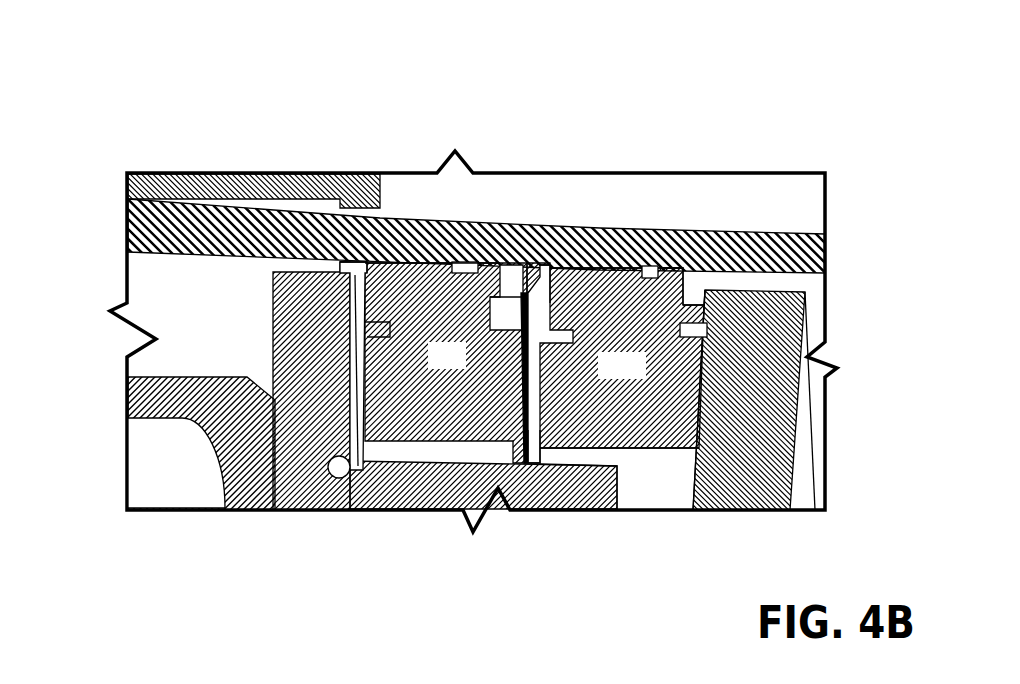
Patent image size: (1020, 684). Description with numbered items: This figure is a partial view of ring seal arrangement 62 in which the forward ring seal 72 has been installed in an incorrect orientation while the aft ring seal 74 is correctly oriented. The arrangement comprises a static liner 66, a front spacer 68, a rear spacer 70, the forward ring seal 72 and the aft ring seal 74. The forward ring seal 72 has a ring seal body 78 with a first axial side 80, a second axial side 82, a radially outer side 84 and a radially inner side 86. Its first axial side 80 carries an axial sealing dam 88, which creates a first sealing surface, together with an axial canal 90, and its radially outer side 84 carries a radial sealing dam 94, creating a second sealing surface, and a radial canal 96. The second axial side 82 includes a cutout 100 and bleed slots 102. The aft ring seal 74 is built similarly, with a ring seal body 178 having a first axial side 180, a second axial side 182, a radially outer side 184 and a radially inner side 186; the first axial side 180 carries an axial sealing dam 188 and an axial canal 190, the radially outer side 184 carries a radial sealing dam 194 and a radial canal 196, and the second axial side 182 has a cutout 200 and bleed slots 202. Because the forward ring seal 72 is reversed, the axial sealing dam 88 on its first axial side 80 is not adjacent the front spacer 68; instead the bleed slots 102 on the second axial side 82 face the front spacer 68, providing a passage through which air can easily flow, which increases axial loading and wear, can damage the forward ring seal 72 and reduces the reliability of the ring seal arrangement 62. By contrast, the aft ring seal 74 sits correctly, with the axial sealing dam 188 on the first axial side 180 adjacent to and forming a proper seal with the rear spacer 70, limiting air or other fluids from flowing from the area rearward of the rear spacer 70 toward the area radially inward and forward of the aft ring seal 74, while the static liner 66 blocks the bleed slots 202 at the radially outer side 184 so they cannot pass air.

The ring seal arrangement 62 is at (81, 160).
The static liner 66 is at (185, 222).
The front spacer 68 is at (293, 372).
The rear spacer 70 is at (765, 393).
The forward ring seal 72 is at (415, 407).
The aft ring seal 74 is at (626, 425).
The ring seal body 78 is at (434, 366).
The first axial side 80 is at (512, 384).
The second axial side 82 is at (384, 374).
The radially outer side 84 is at (371, 258).
The radially inner side 86 is at (455, 432).
The axial sealing dam 88 is at (508, 303).
The axial canal 90 is at (508, 322).
The radial sealing dam 94 is at (477, 262).
The radial canal 96 is at (457, 267).
The cutout 100 is at (381, 370).
The bleed slots 102 is at (353, 297).
The ring seal body 178 is at (603, 376).
The first axial side 180 is at (698, 414).
The second axial side 182 is at (555, 400).
The radially outer side 184 is at (607, 267).
The radially inner side 186 is at (590, 442).
The axial sealing dam 188 is at (697, 318).
The axial canal 190 is at (693, 329).
The radial sealing dam 194 is at (670, 283).
The radial canal 196 is at (647, 275).
The cutout 200 is at (547, 430).
The bleed slots 202 is at (545, 303).